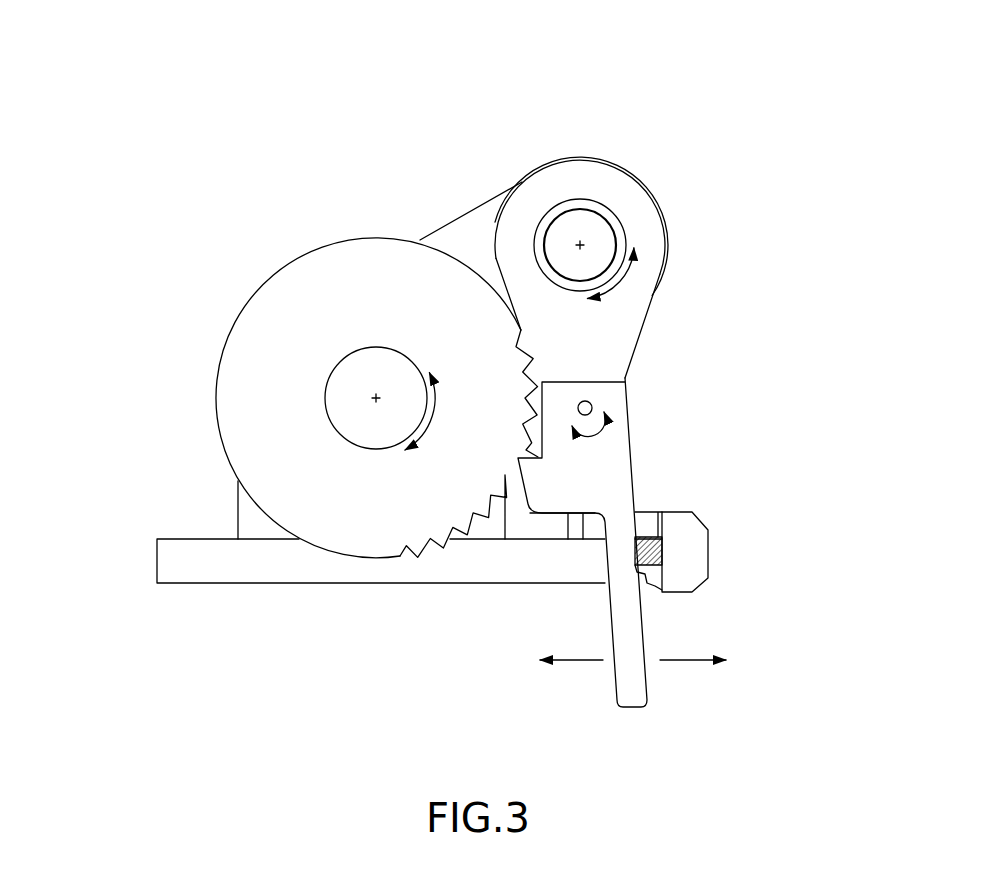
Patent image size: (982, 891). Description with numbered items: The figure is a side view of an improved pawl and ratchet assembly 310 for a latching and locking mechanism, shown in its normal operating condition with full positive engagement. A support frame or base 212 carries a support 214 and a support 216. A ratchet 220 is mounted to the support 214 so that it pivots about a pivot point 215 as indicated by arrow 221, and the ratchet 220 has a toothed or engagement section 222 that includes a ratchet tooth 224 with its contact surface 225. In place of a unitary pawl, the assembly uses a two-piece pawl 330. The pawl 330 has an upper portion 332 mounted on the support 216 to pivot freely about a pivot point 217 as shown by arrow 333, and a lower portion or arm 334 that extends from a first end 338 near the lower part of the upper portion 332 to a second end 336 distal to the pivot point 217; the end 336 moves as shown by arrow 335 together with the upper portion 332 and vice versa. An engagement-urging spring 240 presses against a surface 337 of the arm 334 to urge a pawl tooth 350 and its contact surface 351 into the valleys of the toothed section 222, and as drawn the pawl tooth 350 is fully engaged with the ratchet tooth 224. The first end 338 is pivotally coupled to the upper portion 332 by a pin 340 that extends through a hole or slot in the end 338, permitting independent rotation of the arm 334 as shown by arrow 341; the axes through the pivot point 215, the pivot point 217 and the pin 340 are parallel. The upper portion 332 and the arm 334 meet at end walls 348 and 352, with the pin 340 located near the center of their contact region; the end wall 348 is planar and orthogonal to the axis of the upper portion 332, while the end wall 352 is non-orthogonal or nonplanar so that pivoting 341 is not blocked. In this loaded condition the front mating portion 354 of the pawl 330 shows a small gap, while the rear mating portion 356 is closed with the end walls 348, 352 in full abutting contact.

The support frame or base 212 is at (157, 558).
The support 214 is at (238, 516).
The ratchet 220 is at (247, 286).
The pivot point 215 is at (376, 398).
The support 216 is at (463, 215).
The pivot point 217 is at (580, 245).
The pivoting movement arrow 221 is at (440, 410).
The toothed section 222 is at (484, 478).
The contact surface 225 is at (546, 455).
The ratchet tooth 224 is at (544, 444).
The pawl and ratchet assembly 310 is at (638, 120).
The two-piece pawl 330 is at (706, 365).
The upper portion 332 is at (645, 200).
The pivoting movement arrow 333 is at (617, 287).
The pawl arm 334 is at (664, 692).
The movement arrow 335 is at (655, 656).
The second end 336 is at (630, 698).
The surface 337 is at (638, 539).
The first end 338 is at (626, 422).
The pin 340 is at (626, 408).
The independent rotation arrow 341 is at (626, 437).
The end wall 348 is at (596, 382).
The pawl tooth 350 is at (518, 506).
The contact surface 351 is at (544, 458).
The end wall 352 is at (626, 378).
The front mating portion 354 is at (554, 370).
The rear mating portion 356 is at (608, 362).
The engagement-urging spring 240 is at (682, 553).